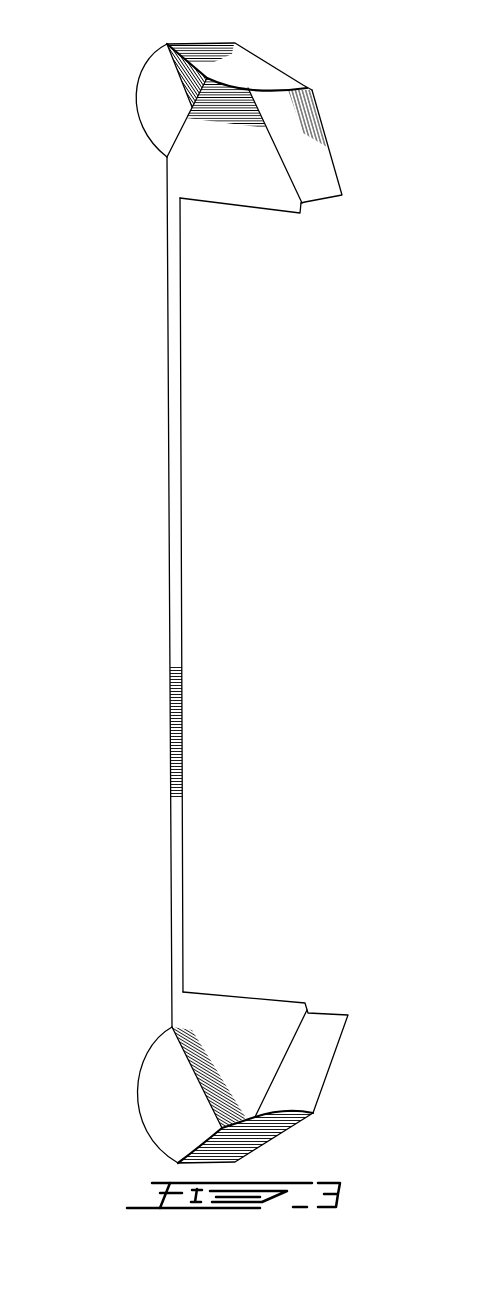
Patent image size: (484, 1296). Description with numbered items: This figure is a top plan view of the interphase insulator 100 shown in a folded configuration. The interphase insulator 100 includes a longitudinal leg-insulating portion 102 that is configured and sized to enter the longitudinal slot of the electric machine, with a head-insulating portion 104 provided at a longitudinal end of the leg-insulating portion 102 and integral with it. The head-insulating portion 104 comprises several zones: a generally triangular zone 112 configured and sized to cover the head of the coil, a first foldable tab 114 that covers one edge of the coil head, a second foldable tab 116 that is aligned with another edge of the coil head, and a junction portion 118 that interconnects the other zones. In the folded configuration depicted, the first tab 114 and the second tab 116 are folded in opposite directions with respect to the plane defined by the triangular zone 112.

The interphase insulator 100 is at (229, 583).
The longitudinal leg-insulating portion 102 is at (173, 833).
The head-insulating portion 104 is at (232, 165).
The generally triangular zone 112 is at (262, 173).
The first foldable tab 114 is at (297, 137).
The second foldable tab 116 is at (162, 88).
The junction portion 118 is at (250, 70).